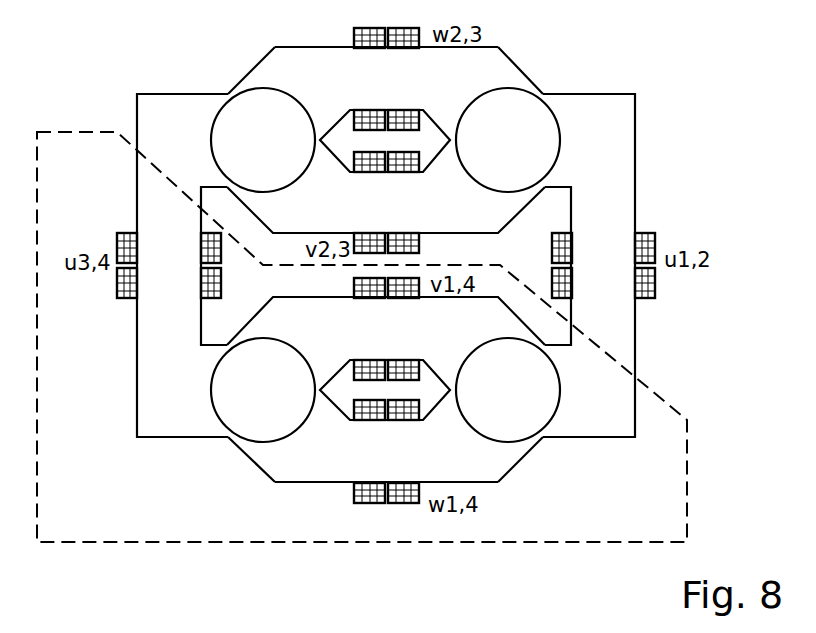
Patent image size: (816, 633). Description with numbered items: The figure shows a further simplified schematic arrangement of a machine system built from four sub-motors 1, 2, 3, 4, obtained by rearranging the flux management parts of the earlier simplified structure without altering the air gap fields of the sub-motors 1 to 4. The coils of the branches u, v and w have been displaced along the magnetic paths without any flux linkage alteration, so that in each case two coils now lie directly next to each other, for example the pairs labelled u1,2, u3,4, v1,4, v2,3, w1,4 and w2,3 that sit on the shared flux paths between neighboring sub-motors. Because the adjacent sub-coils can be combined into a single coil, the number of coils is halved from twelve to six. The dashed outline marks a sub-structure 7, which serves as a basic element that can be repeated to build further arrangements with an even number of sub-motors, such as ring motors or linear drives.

The sub-motor 1 is at (555, 450).
The sub-motor 2 is at (542, 75).
The sub-motor 3 is at (223, 82).
The sub-motor 4 is at (222, 445).
The sub-structure 7 is at (192, 542).